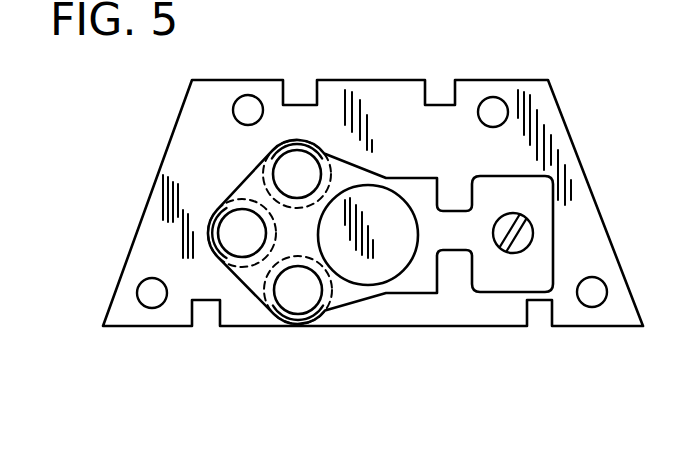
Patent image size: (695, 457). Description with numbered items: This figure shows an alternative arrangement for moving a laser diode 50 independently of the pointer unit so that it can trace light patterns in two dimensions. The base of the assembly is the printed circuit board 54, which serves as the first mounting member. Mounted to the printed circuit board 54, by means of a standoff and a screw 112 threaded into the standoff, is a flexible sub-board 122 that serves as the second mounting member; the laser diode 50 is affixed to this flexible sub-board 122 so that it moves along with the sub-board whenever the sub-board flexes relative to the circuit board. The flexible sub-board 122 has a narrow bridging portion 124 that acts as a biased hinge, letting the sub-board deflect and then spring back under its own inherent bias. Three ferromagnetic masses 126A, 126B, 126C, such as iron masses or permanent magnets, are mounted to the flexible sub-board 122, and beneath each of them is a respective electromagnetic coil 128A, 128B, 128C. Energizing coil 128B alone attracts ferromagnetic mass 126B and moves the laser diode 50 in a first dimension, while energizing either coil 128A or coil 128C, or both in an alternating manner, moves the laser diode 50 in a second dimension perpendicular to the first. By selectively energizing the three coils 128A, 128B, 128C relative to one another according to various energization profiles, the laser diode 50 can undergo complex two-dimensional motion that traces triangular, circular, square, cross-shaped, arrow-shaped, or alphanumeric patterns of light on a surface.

The laser diode 50 is at (388, 190).
The printed circuit board 54 is at (540, 104).
The screw 112 is at (533, 233).
The flexible sub-board 122 is at (525, 191).
The narrow bridging portion 124 is at (455, 240).
The ferromagnetic mass 126A is at (296, 174).
The ferromagnetic mass 126B is at (242, 233).
The ferromagnetic mass 126C is at (290, 292).
The electromagnetic coil 128A is at (284, 141).
The electromagnetic coil 128B is at (210, 250).
The electromagnetic coil 128C is at (303, 324).